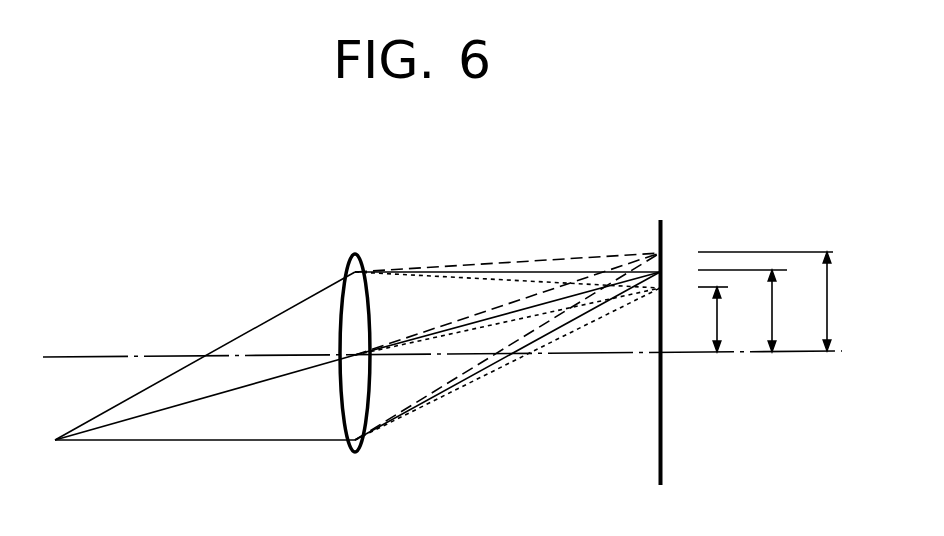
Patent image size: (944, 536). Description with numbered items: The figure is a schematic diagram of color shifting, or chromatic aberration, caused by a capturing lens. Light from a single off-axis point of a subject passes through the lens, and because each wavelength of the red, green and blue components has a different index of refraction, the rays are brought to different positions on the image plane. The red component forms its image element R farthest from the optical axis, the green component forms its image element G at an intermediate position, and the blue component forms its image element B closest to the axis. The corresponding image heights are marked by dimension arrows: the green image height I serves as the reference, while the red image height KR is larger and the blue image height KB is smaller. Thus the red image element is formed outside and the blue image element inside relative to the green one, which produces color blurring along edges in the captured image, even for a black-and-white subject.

The red component image element R is at (594, 333).
The green component image element G is at (571, 347).
The blue component image element B is at (541, 356).
The blue image height KB is at (736, 319).
The green image height I is at (776, 311).
The red image height KR is at (844, 301).